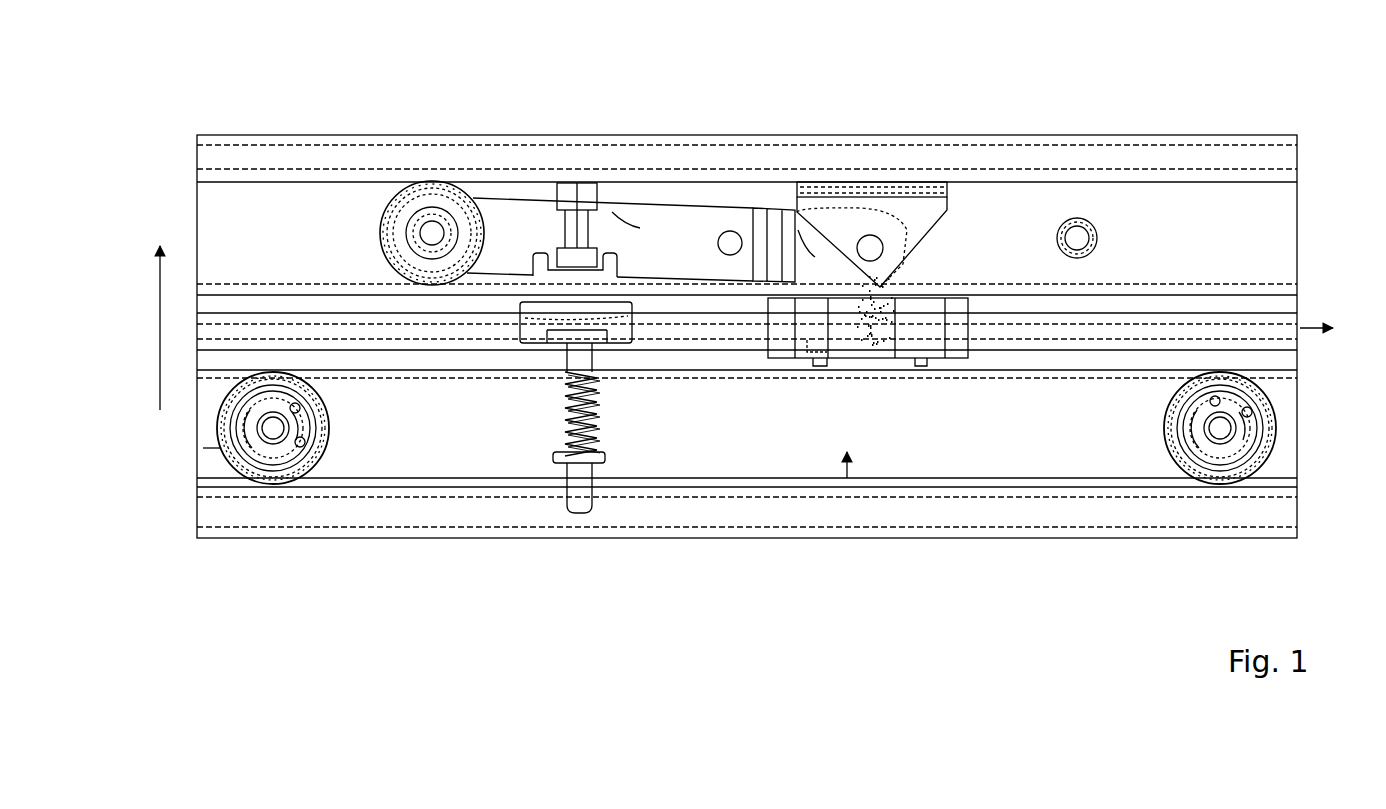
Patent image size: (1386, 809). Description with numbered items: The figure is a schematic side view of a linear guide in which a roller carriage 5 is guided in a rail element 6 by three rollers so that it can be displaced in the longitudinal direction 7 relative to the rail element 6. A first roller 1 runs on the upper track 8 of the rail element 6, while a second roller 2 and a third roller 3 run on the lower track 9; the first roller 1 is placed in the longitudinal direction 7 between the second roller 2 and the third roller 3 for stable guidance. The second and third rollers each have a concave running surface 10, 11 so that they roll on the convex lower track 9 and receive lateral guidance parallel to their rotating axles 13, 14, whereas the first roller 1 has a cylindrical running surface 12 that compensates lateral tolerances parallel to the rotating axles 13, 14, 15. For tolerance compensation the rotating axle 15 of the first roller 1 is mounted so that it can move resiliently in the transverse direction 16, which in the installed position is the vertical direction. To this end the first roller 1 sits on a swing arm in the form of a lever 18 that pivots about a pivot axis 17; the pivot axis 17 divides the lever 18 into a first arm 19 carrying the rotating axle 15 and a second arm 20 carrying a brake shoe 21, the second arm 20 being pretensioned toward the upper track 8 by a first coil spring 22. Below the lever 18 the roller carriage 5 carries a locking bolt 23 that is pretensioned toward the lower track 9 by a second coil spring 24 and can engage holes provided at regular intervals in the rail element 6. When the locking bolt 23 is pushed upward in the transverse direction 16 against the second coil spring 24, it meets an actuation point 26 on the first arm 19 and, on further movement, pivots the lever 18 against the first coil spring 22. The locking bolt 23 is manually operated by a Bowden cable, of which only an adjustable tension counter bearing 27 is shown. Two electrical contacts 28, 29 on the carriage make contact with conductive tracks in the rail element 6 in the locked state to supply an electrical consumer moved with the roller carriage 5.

The first roller 1 is at (412, 192).
The second roller 2 is at (253, 482).
The third roller 3 is at (1273, 450).
The roller carriage 5 is at (848, 477).
The rail element 6 is at (1236, 258).
The longitudinal direction 7 is at (1302, 332).
The upper track 8 is at (1232, 192).
The lower track 9 is at (972, 472).
The concave running surface 10 is at (220, 453).
The concave running surface 11 is at (1217, 483).
The cylindrical running surface 12 is at (376, 223).
The rotating axle 13 is at (273, 430).
The rotating axle 14 is at (1213, 427).
The rotating axle 15 is at (432, 233).
The transverse direction 16 is at (190, 352).
The pivot axis 17 is at (730, 231).
The lever 18 is at (657, 218).
The first arm 19 is at (617, 222).
The second arm 20 is at (800, 190).
The brake shoe 21 is at (917, 213).
The first coil spring 22 is at (868, 340).
The locking bolt 23 is at (578, 470).
The second coil spring 24 is at (592, 390).
The actuation point 26 is at (557, 345).
The adjustable tension counter bearing 27 is at (586, 190).
The electrical contact 28 is at (822, 338).
The electrical contact 29 is at (926, 342).